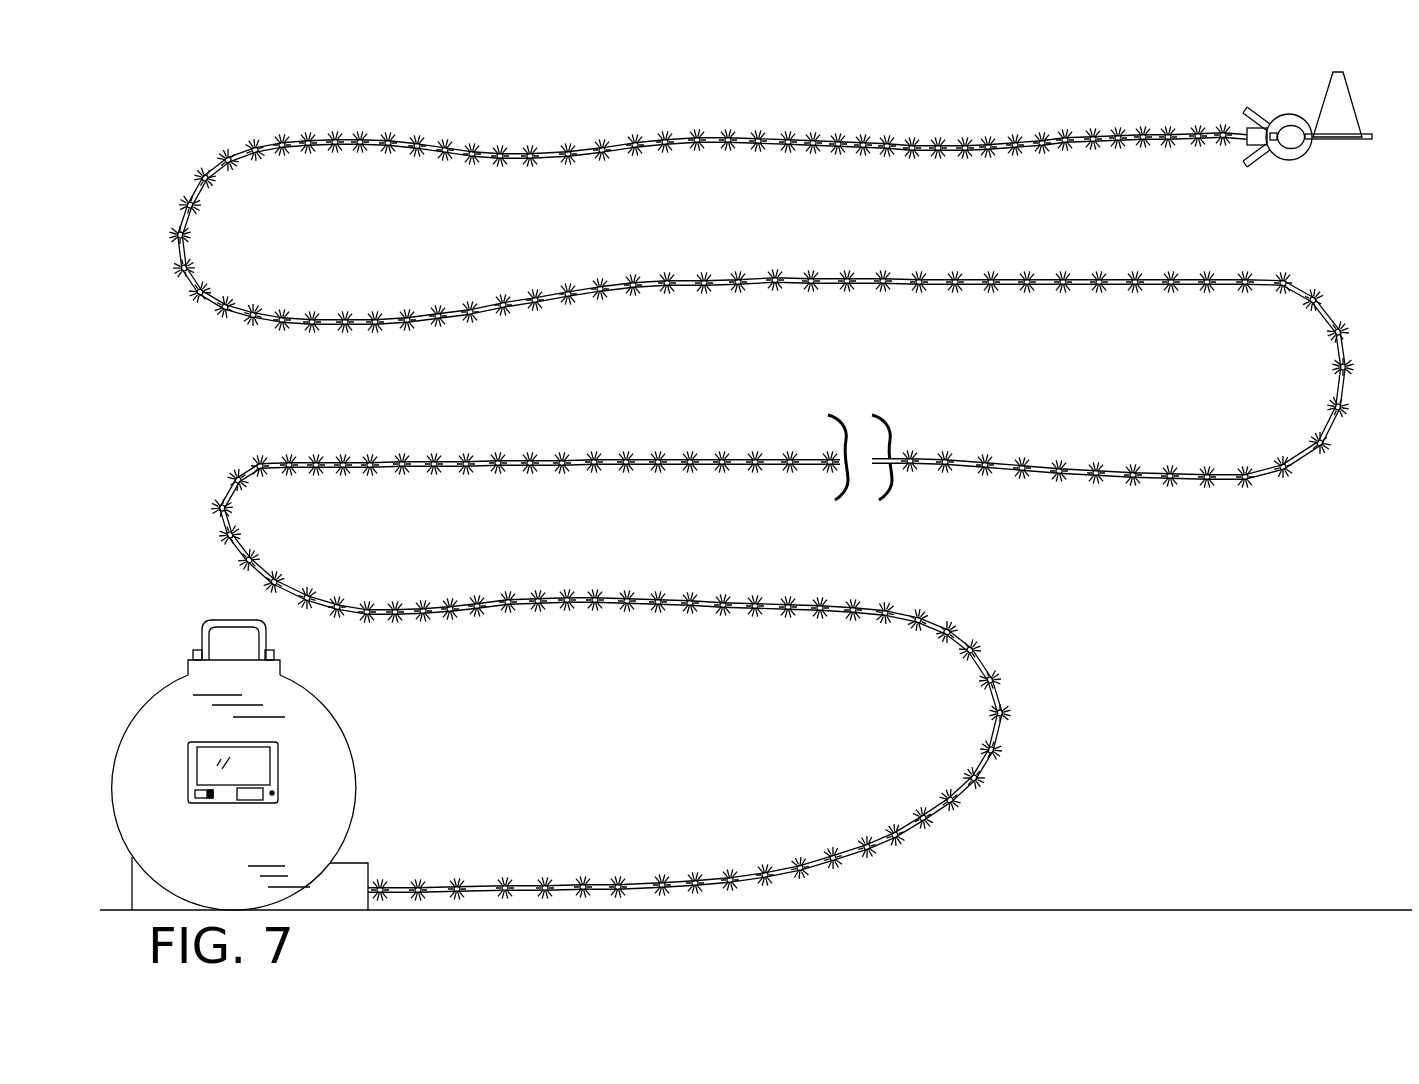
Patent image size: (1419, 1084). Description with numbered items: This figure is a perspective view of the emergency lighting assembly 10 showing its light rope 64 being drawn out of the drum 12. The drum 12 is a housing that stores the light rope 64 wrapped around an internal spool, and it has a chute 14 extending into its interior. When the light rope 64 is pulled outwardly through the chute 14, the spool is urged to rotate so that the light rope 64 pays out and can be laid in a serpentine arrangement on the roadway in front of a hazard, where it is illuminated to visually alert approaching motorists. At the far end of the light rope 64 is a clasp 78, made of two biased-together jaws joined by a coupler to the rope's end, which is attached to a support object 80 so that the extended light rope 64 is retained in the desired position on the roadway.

The emergency lighting assembly 10 is at (152, 205).
The drum 12 is at (150, 698).
The chute 14 is at (398, 846).
The light rope 64 is at (1003, 734).
The clasp 78 is at (1282, 90).
The support object 80 is at (1340, 72).